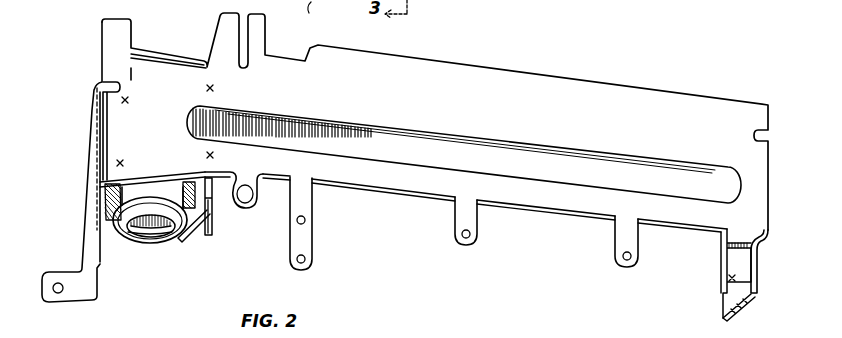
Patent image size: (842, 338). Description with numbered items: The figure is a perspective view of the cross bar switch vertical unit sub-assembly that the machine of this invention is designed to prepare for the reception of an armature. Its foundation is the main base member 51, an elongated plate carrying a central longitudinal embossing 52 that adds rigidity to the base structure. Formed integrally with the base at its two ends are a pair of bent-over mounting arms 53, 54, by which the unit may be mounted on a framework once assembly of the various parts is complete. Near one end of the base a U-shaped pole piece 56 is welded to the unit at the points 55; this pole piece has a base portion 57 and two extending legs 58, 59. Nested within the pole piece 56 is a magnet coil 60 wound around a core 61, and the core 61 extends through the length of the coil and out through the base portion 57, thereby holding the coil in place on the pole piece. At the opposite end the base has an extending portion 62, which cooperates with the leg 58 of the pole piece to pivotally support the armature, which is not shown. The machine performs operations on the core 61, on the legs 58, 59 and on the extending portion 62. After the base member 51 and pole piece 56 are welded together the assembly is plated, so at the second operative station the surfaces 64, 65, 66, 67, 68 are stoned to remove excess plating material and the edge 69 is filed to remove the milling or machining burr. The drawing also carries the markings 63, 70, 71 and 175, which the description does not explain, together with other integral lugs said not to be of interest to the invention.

The main base member 51 is at (532, 82).
The central longitudinal embossing 52 is at (550, 160).
The bent-over mounting arm 53 is at (90, 167).
The bent-over mounting arm 54 is at (756, 270).
The welding points 55 is at (206, 155).
The U-shaped pole piece 56 is at (150, 47).
The base portion of pole piece 57 is at (170, 54).
The pole piece leg 58 is at (115, 198).
The pole piece leg 59 is at (213, 171).
The magnet coil 60 is at (157, 195).
The core 61 is at (152, 226).
The extending portion 62 is at (727, 257).
The bracket arm 63 is at (212, 203).
The surface to be stoned 64 is at (120, 200).
The surface to be stoned 65 is at (113, 230).
The surface to be stoned 66 is at (195, 239).
The surface to be stoned 67 is at (722, 292).
The surface to be stoned 68 is at (731, 275).
The edge to be filed 69 is at (213, 215).
The bore thread 70 is at (143, 233).
The ring face 71 is at (130, 230).
The section indicator 175 is at (327, 13).